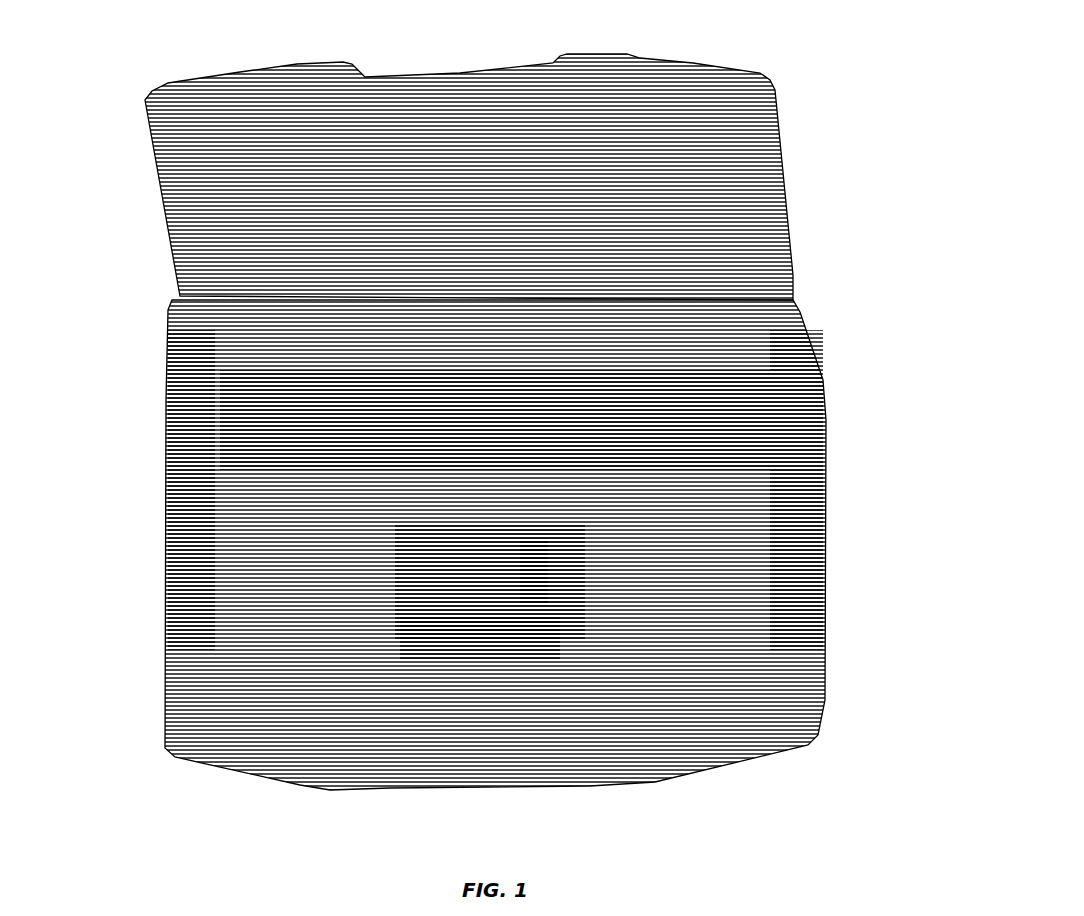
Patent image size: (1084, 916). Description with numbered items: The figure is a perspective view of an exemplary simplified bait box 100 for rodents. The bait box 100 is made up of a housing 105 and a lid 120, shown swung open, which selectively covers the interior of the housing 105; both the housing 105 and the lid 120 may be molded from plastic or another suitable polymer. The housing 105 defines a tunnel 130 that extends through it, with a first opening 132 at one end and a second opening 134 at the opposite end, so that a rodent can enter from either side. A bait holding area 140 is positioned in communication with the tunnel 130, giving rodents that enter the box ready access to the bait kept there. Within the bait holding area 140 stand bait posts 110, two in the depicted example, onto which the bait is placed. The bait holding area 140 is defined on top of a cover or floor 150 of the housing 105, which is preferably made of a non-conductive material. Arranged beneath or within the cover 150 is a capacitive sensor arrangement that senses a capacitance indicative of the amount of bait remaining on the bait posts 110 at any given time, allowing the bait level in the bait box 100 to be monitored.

The bait box 100 is at (506, 428).
The housing 105 is at (506, 566).
The bait posts 110 is at (437, 650).
The lid 120 is at (228, 77).
The tunnel 130 is at (495, 420).
The first opening 132 is at (822, 419).
The second opening 134 is at (158, 416).
The bait holding area 140 is at (490, 582).
The cover 150 is at (523, 583).